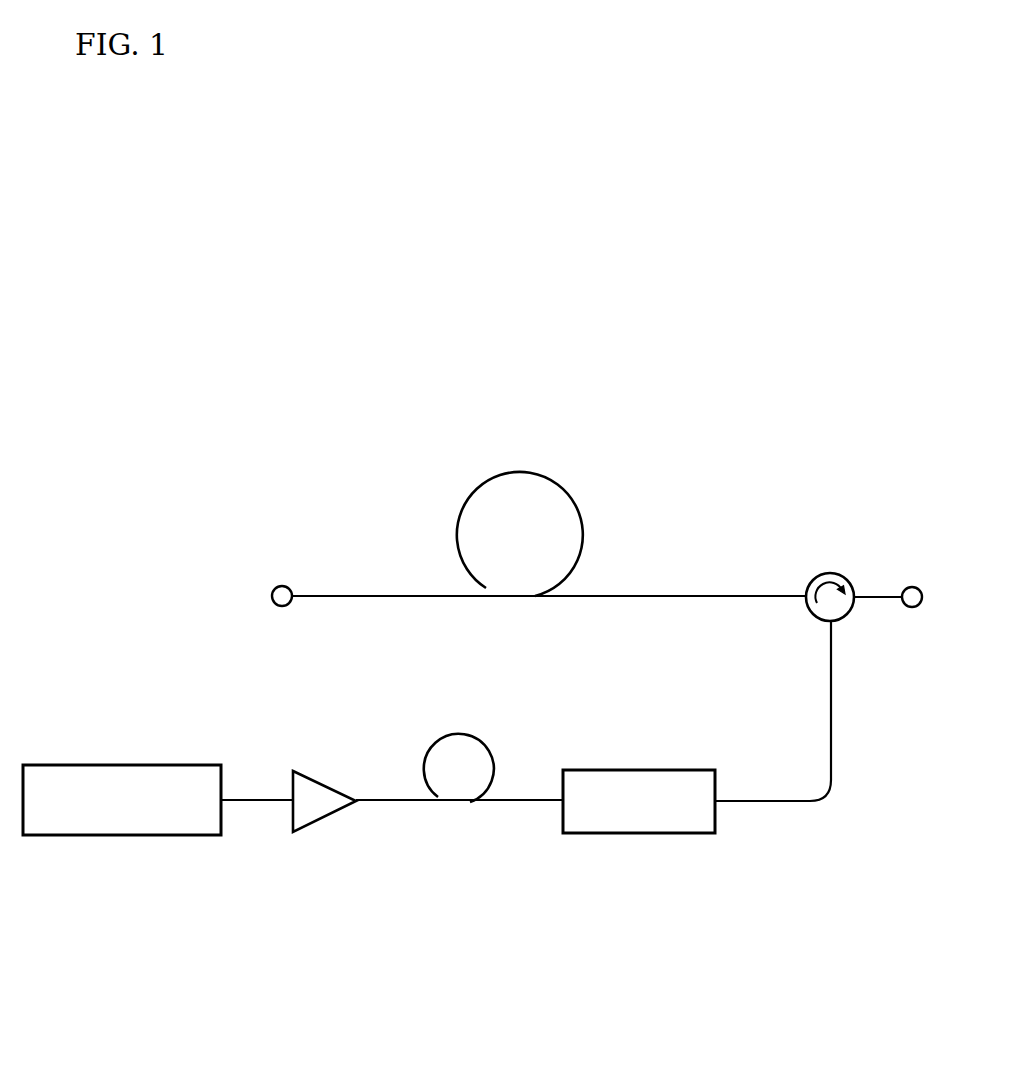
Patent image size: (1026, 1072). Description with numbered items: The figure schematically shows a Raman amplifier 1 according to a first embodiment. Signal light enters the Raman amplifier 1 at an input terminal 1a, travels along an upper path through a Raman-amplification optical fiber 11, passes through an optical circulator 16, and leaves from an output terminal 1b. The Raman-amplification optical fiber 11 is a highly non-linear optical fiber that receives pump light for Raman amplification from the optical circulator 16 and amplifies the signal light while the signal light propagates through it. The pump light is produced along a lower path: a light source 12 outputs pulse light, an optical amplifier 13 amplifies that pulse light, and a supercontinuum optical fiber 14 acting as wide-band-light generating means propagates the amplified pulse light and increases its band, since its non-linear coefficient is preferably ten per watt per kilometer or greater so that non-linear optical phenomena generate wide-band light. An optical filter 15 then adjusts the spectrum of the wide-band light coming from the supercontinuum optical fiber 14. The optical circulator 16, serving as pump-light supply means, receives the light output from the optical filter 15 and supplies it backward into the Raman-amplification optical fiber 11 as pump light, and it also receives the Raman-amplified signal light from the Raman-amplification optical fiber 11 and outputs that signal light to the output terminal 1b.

The Raman amplifier 1 is at (676, 328).
The input terminal 1a is at (282, 586).
The output terminal 1b is at (911, 587).
The Raman-amplification optical fiber 11 is at (519, 470).
The light source 12 is at (133, 836).
The optical amplifier 13 is at (323, 818).
The supercontinuum optical fiber 14 is at (458, 733).
The optical filter 15 is at (643, 834).
The optical circulator 16 is at (830, 573).